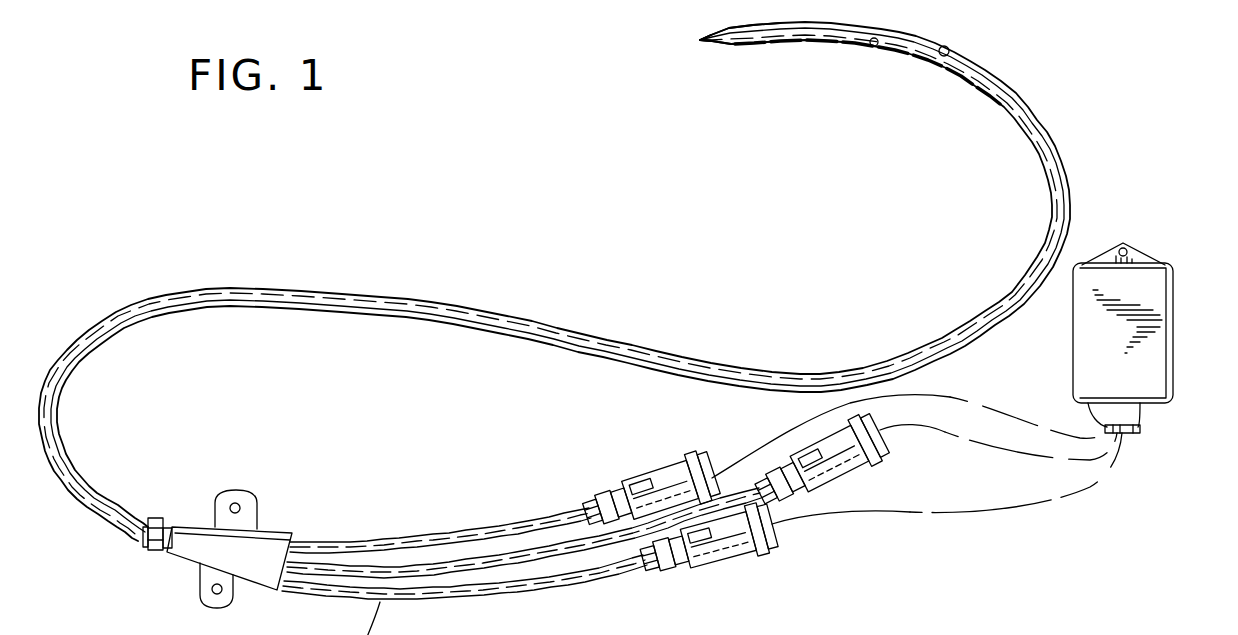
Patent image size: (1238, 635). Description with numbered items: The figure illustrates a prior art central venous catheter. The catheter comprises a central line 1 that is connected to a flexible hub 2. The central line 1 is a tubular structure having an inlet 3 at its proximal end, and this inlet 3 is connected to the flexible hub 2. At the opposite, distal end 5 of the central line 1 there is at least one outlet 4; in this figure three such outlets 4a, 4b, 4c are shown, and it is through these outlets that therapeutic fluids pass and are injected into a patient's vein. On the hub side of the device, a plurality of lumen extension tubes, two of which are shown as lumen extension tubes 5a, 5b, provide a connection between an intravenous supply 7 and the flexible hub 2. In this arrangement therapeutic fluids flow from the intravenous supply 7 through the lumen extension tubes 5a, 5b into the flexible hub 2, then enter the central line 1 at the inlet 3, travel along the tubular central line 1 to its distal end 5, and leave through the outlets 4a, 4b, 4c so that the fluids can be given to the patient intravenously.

The central line 1 is at (513, 323).
The flexible hub 2 is at (218, 548).
The inlet 3 is at (153, 552).
The outlet 4 is at (866, 42).
The outlet 4a is at (700, 44).
The outlet 4b is at (873, 46).
The outlet 4c is at (944, 51).
The distal end 5 is at (728, 30).
The lumen extension tube 5a is at (540, 522).
The lumen extension tube 5b is at (467, 567).
The intravenous supply 7 is at (1152, 297).